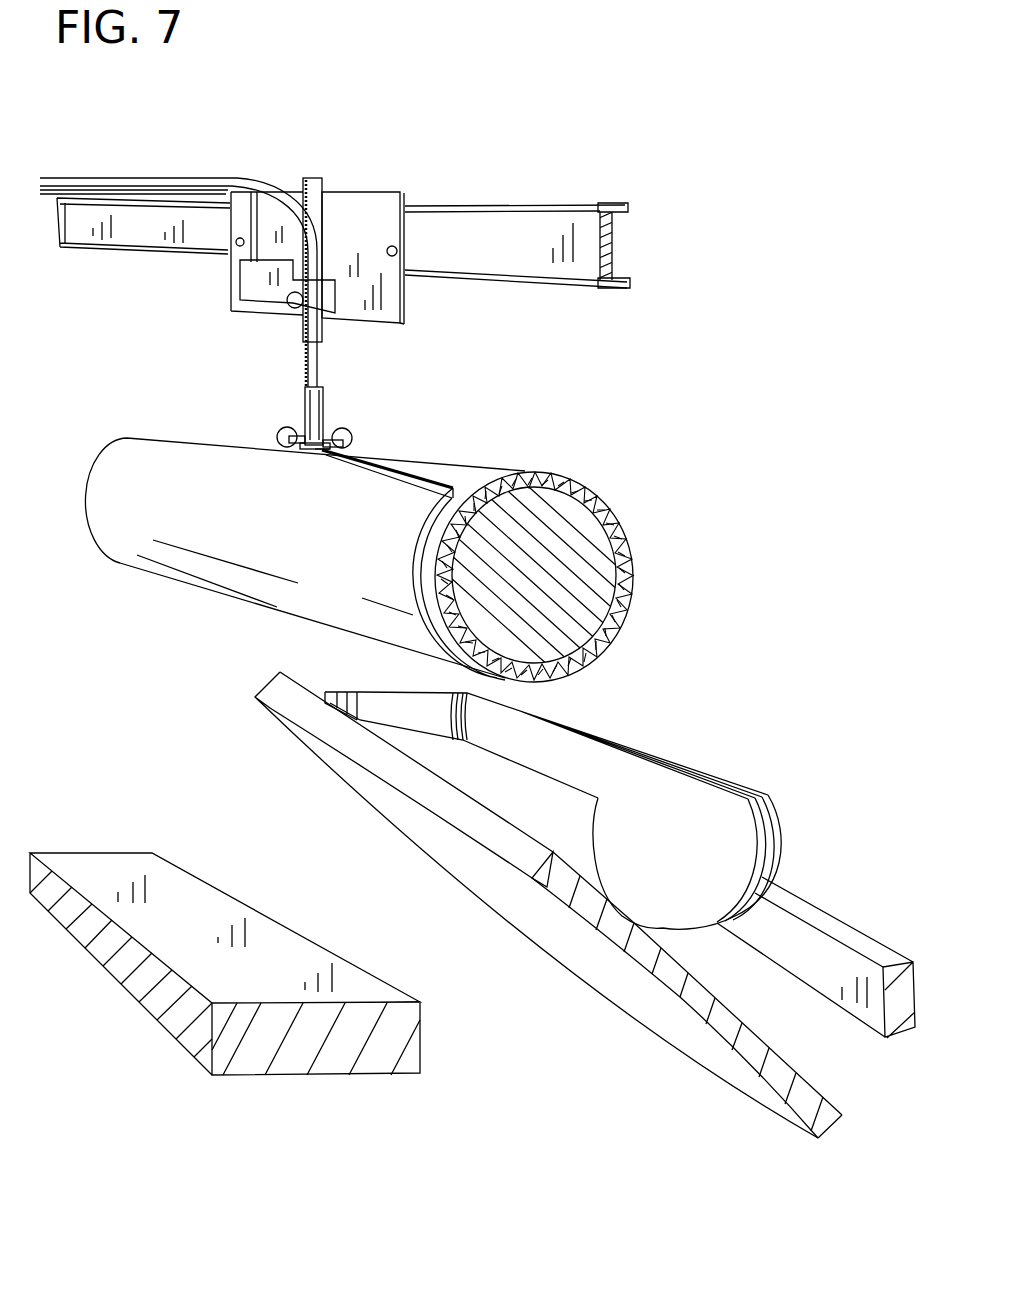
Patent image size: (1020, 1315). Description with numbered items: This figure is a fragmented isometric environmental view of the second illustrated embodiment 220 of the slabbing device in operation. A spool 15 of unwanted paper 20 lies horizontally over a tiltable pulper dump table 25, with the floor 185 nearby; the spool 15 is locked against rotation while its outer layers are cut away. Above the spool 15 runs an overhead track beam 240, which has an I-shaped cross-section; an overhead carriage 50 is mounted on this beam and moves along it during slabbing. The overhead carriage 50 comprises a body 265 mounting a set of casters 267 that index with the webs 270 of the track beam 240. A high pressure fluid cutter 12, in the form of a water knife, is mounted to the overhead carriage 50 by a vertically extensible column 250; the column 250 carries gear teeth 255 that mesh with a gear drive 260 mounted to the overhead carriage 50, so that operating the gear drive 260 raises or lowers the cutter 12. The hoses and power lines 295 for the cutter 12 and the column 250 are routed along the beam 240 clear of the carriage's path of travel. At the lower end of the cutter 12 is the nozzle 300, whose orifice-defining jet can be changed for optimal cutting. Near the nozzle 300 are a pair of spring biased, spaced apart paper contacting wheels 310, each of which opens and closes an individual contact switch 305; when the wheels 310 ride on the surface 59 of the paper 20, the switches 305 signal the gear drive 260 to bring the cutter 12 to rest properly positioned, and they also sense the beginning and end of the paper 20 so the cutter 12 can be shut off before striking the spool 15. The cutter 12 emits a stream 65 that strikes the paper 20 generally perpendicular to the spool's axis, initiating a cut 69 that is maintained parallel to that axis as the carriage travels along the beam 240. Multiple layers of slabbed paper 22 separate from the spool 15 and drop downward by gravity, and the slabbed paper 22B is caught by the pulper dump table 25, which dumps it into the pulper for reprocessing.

The hoses and/or power lines 295 is at (70, 187).
The gear teeth 255 is at (293, 180).
The body 265 is at (372, 210).
The nozzle 300 is at (312, 412).
The second illustrated embodiment 220 is at (412, 163).
The vertically extensible column 250 is at (317, 228).
The overhead carriage 50 is at (413, 302).
The casters 267 is at (410, 257).
The gear drive 260 is at (240, 277).
The overhead track beam 240 is at (573, 195).
The webs 270 is at (583, 263).
The unwanted paper 20 is at (155, 473).
The surface 59 is at (222, 504).
The spool 15 is at (538, 493).
The slabbed paper 22 is at (430, 477).
The high pressure fluid cutter 12 is at (335, 392).
The contact switch 305 is at (303, 418).
The paper contacting wheels 310 is at (350, 445).
The stream 65 is at (315, 455).
The cut 69 is at (327, 460).
The slabbed paper 22B is at (707, 782).
The pulper dump table 25 is at (608, 1008).
The floor 185 is at (803, 910).